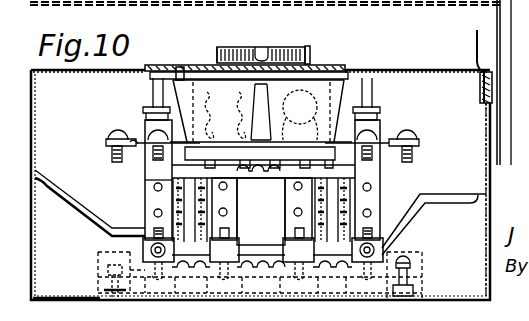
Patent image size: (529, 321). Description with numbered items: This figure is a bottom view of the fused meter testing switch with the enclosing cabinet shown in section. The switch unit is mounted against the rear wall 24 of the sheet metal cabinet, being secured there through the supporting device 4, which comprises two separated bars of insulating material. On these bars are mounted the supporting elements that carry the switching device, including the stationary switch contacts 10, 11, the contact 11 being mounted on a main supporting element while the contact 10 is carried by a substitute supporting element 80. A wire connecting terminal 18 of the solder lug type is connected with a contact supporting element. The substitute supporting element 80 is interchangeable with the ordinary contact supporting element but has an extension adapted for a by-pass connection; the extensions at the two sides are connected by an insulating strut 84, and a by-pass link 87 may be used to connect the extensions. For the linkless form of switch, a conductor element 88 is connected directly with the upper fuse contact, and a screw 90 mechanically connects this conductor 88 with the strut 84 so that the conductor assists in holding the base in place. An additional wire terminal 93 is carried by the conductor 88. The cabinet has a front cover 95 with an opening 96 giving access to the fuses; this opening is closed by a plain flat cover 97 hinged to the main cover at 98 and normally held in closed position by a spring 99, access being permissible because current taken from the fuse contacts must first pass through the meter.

The supporting device 4 is at (420, 269).
The switch contact 10 is at (174, 208).
The switch contact 11 is at (205, 210).
The wire connecting terminal 18 is at (143, 262).
The rear wall 24 is at (82, 293).
The substitute supporting element 80 is at (147, 172).
The insulating strut 84 is at (140, 150).
The by-pass link 87 is at (142, 118).
The conductor element 88 is at (110, 142).
The screw 90 is at (142, 130).
The wire terminal 93 is at (104, 130).
The cover 95 is at (437, 70).
The opening 96 is at (342, 69).
The flat cover 97 is at (181, 66).
The hinge 98 is at (309, 54).
The spring 99 is at (286, 36).